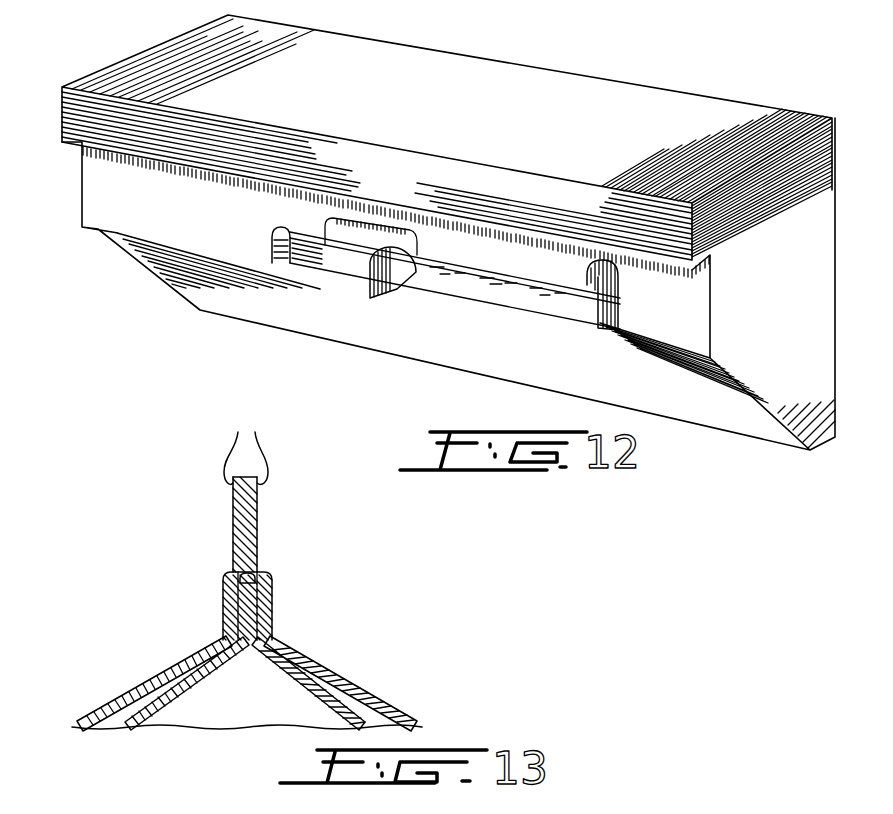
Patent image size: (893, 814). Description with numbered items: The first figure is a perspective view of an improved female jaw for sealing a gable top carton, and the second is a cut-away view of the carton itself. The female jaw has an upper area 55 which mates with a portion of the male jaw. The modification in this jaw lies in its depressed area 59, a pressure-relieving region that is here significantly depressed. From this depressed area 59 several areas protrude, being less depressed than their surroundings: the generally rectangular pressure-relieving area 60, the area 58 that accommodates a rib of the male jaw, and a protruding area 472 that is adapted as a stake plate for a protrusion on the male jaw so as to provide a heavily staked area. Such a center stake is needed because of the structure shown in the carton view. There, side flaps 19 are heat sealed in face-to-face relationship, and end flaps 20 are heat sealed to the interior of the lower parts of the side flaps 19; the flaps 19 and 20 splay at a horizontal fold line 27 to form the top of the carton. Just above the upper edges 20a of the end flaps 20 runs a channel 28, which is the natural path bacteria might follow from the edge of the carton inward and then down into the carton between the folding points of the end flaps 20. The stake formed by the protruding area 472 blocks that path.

In FIG. 12, the upper area 55 is at (558, 195).
In FIG. 12, the slot 58 is at (604, 292).
In FIG. 12, the depressed area 59 is at (492, 288).
In FIG. 12, the pressure relieving area 60 is at (404, 226).
In FIG. 12, the protruding area 472 is at (356, 250).
In FIG. 13, the side flaps 19 is at (246, 444).
In FIG. 13, the end flaps 20 is at (261, 610).
In FIG. 13, the upper edges 20a is at (241, 573).
In FIG. 13, the horizontal fold line 27 is at (221, 642).
In FIG. 13, the channel 28 is at (254, 574).